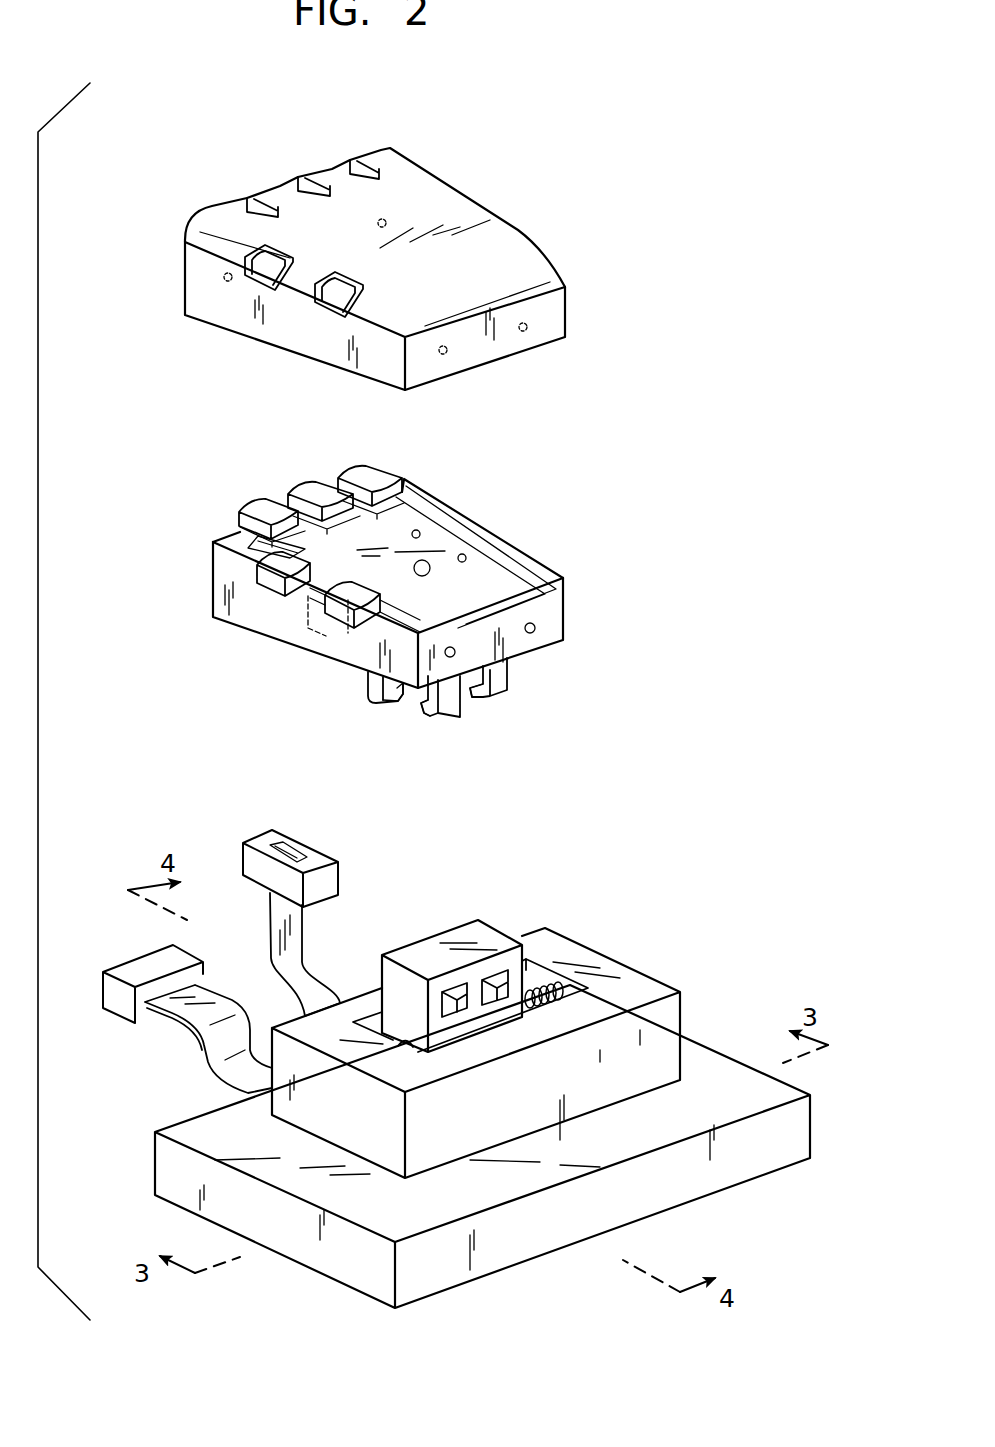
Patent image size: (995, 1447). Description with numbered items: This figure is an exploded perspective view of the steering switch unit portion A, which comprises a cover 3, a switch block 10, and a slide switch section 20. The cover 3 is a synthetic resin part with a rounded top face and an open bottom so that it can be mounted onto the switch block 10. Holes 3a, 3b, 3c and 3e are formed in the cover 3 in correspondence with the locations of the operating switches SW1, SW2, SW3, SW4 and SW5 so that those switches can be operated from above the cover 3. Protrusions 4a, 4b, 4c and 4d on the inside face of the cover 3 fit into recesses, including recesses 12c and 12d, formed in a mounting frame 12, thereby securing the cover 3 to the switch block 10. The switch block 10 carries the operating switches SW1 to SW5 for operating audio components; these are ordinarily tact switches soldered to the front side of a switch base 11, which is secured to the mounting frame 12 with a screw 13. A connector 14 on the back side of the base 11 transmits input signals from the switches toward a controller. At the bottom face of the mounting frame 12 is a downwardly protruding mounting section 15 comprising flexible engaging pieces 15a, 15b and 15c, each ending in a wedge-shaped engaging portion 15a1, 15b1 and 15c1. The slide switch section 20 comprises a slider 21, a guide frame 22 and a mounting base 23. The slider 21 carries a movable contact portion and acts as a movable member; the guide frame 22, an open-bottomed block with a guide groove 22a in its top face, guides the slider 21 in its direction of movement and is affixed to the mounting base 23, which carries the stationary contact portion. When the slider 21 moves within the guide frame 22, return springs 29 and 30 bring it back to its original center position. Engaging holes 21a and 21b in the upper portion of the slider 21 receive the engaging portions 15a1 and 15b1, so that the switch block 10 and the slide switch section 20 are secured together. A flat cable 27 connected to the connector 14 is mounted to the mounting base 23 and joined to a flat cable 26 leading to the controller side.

The steering switch unit portion A is at (532, 158).
The cover 3 is at (530, 238).
The hole 3a is at (247, 196).
The hole 3b is at (295, 176).
The hole 3c is at (343, 157).
The hole 3e is at (336, 297).
The protrusion 4a is at (224, 276).
The protrusion 4b is at (385, 218).
The protrusion 4c is at (527, 329).
The protrusion 4d is at (447, 352).
The switch block 10 is at (429, 614).
The switch base 11 is at (473, 574).
The mounting frame 12 is at (553, 614).
The recess 12c is at (533, 632).
The recess 12d is at (454, 655).
The screw 13 is at (424, 563).
The connector 14 is at (317, 622).
The mounting section 15 is at (433, 733).
The flexible engaging piece 15a is at (447, 700).
The engaging portion 15a1 is at (425, 708).
The flexible engaging piece 15b is at (508, 678).
The engaging portion 15b1 is at (474, 698).
The flexible engaging piece 15c is at (363, 690).
The engaging portion 15c1 is at (399, 695).
The operating switch SW1 is at (260, 510).
The operating switch SW2 is at (313, 492).
The operating switch SW3 is at (363, 482).
The operating switch SW4 is at (277, 582).
The operating switch SW5 is at (350, 630).
The slide switch section 20 is at (513, 1017).
The slider 21 is at (486, 981).
The engaging hole 21a is at (453, 1005).
The engaging hole 21b is at (498, 993).
The guide frame 22 is at (652, 1028).
The guide groove 22a is at (535, 977).
The mounting base 23 is at (705, 1073).
The flat cable 26 is at (183, 1015).
The flat cable 27 is at (277, 927).
The return spring 29 is at (558, 984).
The return spring 30 is at (405, 1043).